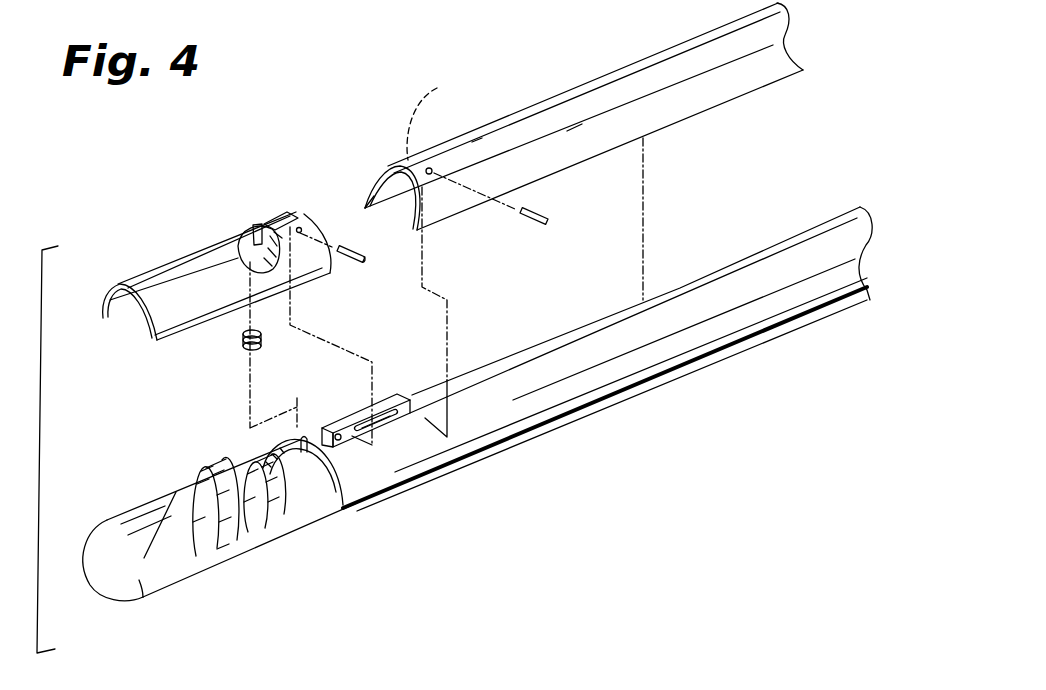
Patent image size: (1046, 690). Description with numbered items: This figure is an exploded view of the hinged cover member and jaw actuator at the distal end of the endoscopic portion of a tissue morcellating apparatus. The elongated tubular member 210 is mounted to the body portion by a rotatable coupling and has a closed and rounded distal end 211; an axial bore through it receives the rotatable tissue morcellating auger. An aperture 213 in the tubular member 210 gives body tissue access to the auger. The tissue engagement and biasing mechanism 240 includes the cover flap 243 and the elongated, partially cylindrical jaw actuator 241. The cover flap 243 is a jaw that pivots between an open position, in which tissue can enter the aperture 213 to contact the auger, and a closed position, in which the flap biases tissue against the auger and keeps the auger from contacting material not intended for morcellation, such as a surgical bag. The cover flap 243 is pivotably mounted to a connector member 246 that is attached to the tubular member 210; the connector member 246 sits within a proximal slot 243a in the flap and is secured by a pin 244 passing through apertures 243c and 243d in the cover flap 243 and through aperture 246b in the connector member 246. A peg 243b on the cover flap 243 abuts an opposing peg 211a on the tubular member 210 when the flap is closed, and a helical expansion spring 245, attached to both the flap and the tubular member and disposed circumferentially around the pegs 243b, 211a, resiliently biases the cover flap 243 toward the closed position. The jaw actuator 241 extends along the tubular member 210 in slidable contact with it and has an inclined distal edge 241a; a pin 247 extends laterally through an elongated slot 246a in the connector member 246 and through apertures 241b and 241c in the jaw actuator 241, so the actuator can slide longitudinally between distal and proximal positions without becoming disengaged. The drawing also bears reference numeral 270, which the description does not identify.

The elongated tubular member 210 is at (726, 298).
The distal end 211 is at (114, 588).
The peg 211a is at (300, 440).
The aperture 213 is at (183, 471).
The tissue engagement and biasing mechanism 240 is at (134, 364).
The jaw actuator 241 is at (638, 68).
The distal edge 241a is at (366, 200).
The aperture 241b is at (434, 169).
The aperture 241c is at (431, 108).
The cover flap 243 is at (188, 262).
The proximal slot 243a is at (302, 205).
The peg 243b is at (243, 228).
The aperture 243c is at (312, 218).
The aperture 243d is at (283, 212).
The pin 244 is at (366, 262).
The helical expansion spring 245 is at (238, 341).
The connector member 246 is at (404, 393).
The elongated slot 246a is at (381, 410).
The aperture 246b is at (342, 418).
The pin 247 is at (547, 220).
The ratchet rings 270 is at (257, 517).